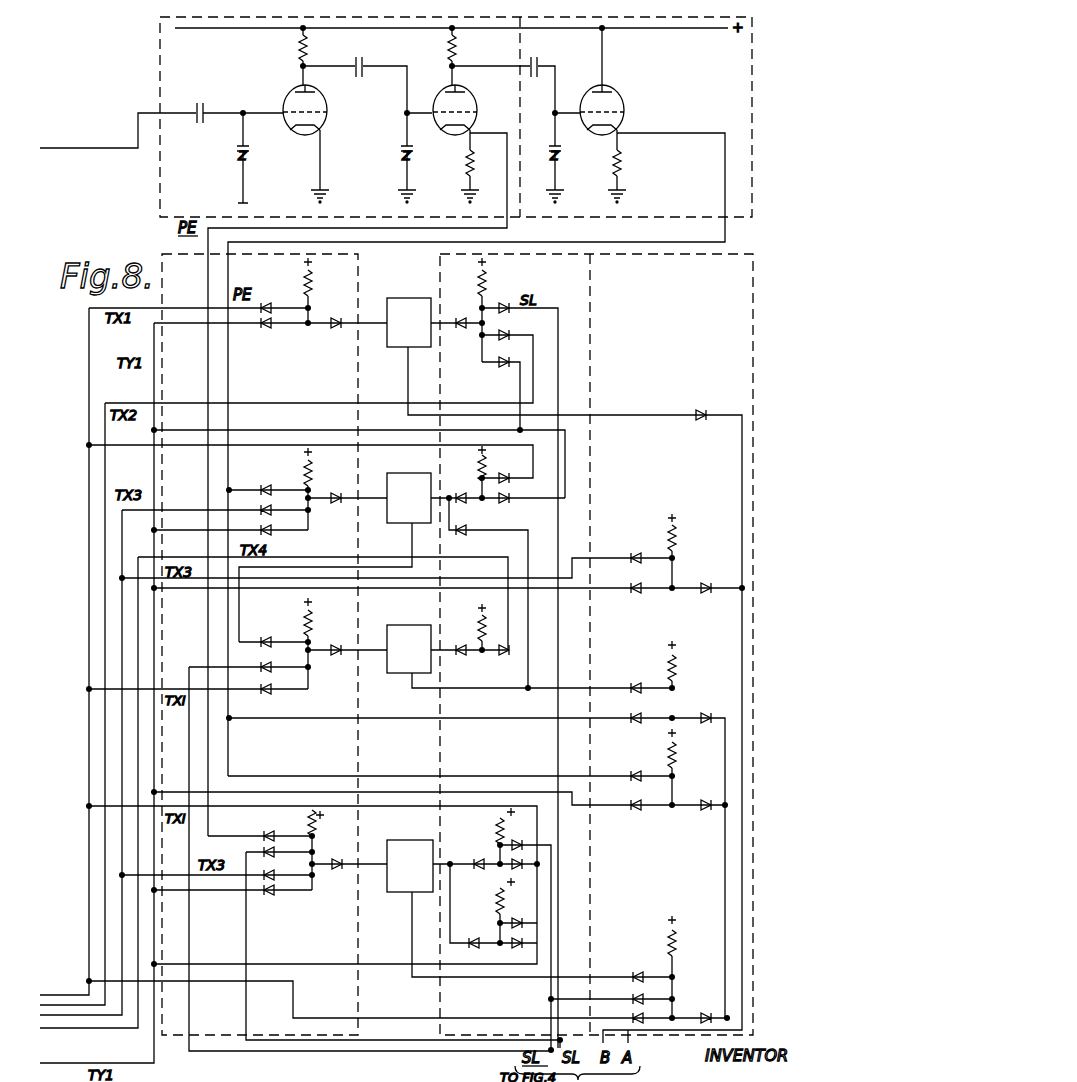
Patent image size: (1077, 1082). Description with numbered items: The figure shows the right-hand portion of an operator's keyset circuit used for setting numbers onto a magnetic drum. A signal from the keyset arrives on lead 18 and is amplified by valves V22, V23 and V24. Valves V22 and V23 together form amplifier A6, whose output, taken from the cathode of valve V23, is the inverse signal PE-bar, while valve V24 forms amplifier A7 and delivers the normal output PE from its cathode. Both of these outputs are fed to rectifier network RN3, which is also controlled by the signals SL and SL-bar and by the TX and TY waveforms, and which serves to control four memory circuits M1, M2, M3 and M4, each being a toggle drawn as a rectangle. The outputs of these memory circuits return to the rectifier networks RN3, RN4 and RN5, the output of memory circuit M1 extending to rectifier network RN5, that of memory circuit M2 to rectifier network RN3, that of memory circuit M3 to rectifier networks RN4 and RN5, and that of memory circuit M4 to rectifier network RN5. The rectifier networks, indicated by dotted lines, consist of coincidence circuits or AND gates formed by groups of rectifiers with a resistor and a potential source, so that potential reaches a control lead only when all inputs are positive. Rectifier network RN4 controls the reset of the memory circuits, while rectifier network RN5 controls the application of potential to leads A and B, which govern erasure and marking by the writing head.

The lead 18 is at (138, 109).
The valve V22 is at (292, 114).
The valve V23 is at (474, 114).
The valve V24 is at (613, 114).
The amplifier A6 is at (359, 144).
The amplifier A7 is at (661, 97).
The memory circuit M1 is at (409, 322).
The memory circuit M2 is at (409, 498).
The memory circuit M3 is at (409, 649).
The memory circuit M4 is at (410, 866).
The rectifier network RN3 is at (287, 751).
The rectifier network RN4 is at (507, 751).
The rectifier network RN5 is at (637, 626).